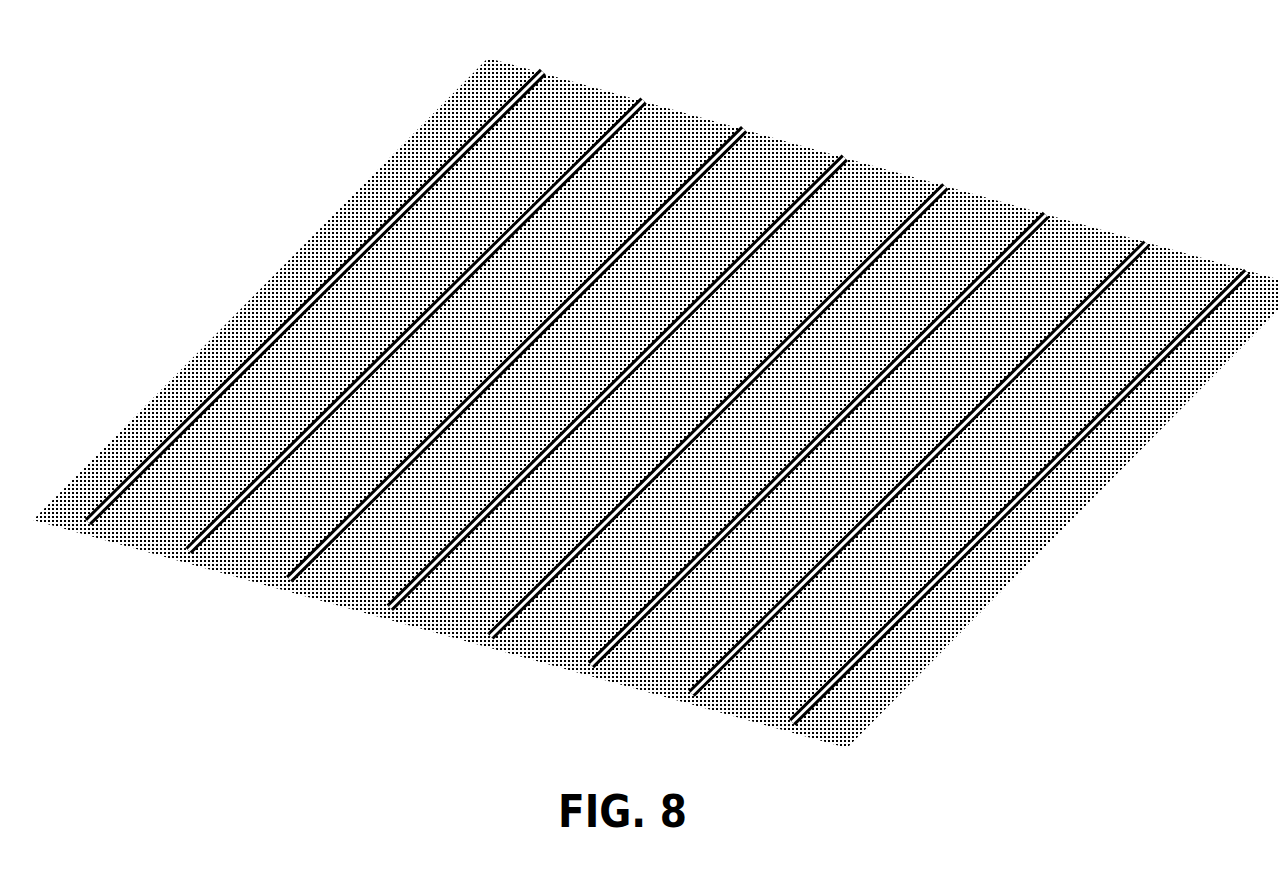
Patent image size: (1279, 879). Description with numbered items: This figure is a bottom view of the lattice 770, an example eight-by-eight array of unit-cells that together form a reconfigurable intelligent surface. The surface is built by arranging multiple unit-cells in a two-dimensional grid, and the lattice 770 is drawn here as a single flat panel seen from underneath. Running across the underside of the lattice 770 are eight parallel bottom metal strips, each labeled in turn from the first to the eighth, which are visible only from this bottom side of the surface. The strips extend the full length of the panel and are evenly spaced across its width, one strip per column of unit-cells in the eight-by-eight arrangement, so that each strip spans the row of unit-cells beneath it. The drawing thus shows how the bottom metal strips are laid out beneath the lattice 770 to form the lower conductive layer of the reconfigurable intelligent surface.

The lattice 770 is at (922, 87).